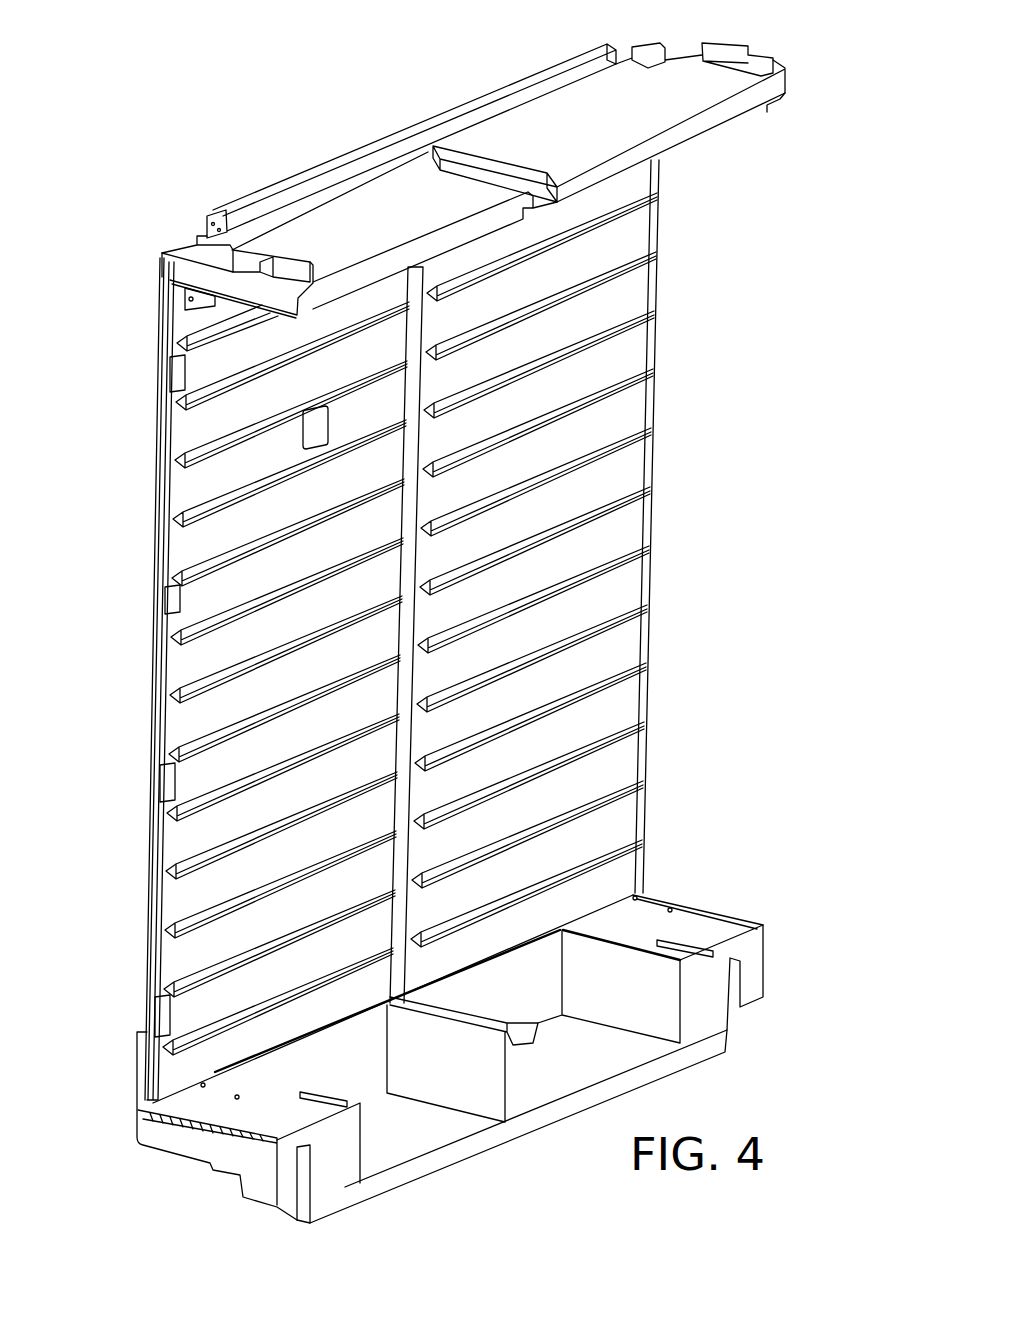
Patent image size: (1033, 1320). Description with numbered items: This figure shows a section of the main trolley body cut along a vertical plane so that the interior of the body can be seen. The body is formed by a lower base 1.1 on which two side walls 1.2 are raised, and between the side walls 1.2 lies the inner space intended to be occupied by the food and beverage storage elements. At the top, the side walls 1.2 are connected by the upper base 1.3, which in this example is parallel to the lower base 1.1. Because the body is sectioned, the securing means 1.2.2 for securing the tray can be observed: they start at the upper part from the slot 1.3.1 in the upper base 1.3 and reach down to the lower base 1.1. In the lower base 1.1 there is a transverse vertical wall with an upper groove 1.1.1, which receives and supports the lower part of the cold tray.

The lower base 1.1 is at (291, 1037).
The upper groove 1.1.1 is at (472, 1013).
The side wall 1.2 is at (475, 470).
The securing means 1.2.2 is at (417, 505).
The upper base 1.3 is at (352, 205).
The slot 1.3.1 is at (480, 140).